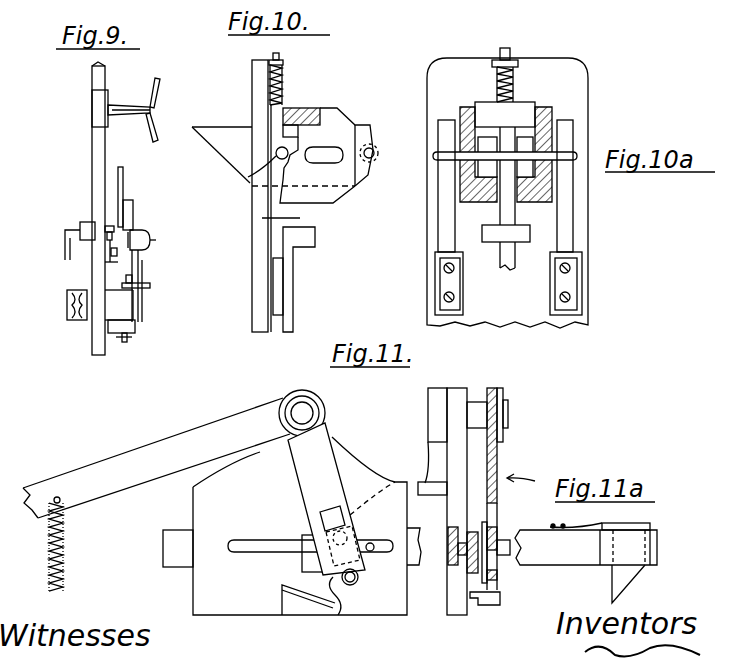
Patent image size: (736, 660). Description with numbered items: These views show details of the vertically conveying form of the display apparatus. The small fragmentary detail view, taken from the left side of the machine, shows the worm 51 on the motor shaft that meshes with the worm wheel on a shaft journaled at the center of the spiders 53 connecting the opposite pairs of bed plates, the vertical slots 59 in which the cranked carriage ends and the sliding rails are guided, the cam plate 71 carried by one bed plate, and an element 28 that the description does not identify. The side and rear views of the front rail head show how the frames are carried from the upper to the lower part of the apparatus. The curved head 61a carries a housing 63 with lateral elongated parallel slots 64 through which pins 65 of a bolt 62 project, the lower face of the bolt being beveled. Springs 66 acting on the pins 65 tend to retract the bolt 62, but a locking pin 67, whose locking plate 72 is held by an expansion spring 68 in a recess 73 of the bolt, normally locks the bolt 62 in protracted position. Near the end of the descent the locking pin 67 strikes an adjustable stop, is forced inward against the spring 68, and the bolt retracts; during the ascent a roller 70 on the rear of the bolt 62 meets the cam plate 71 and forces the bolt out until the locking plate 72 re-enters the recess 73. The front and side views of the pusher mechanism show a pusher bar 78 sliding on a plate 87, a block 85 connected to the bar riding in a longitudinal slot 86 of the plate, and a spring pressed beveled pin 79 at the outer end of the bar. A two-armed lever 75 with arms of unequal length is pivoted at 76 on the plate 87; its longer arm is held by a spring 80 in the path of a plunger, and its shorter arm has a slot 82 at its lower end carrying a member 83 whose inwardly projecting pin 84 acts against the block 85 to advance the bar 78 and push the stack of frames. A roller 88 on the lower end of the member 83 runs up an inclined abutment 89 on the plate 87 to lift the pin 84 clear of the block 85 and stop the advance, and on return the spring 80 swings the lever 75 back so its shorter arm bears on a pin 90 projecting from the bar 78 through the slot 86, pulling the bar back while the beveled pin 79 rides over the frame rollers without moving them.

In FIG. 9, the adjusting screw 28 is at (121, 342).
In FIG. 9, the worm 51 is at (108, 237).
In FIG. 9, the spider 53 is at (110, 258).
In FIG. 9, the vertical slot 59 is at (142, 288).
In FIG. 10, the curved head 61a is at (258, 275).
In FIG. 10A, the curved head 61a is at (570, 80).
In FIG. 10, the bolt 62 is at (212, 127).
In FIG. 10A, the bolt 62 is at (552, 135).
In FIG. 10, the housing 63 is at (340, 124).
In FIG. 10, the elongated parallel slot 64 is at (328, 163).
In FIG. 10A, the elongated parallel slot 64 is at (458, 163).
In FIG. 10, the pin 65 is at (248, 177).
In FIG. 10A, the pin 65 is at (433, 156).
In FIG. 10, the spring 66 is at (292, 219).
In FIG. 10A, the spring 66 is at (450, 216).
In FIG. 10, the locking pin 67 is at (302, 247).
In FIG. 10A, the locking pin 67 is at (495, 238).
In FIG. 10, the expansion spring 68 is at (283, 86).
In FIG. 10A, the expansion spring 68 is at (513, 78).
In FIG. 10, the roller 70 is at (376, 150).
In FIG. 9, the cam plate 71 is at (149, 98).
In FIG. 10, the locking plate 72 is at (300, 114).
In FIG. 10A, the locking plate 72 is at (520, 110).
In FIG. 10, the recess 73 is at (318, 118).
In FIG. 11, the two-armed lever 75 is at (108, 470).
In FIG. 11A, the two-armed lever 75 is at (492, 462).
In FIG. 11A, the pivot 76 is at (475, 412).
In FIG. 11, the pusher bar 78 is at (175, 545).
In FIG. 11A, the pusher bar 78 is at (578, 566).
In FIG. 11A, the spring pressed beveled pin 79 is at (628, 590).
In FIG. 11, the spring 80 is at (64, 552).
In FIG. 11, the slot 82 is at (332, 516).
In FIG. 11, the member 83 is at (337, 608).
In FIG. 11A, the member 83 is at (500, 535).
In FIG. 11, the inwardly projecting pin 84 is at (378, 486).
In FIG. 11A, the inwardly projecting pin 84 is at (492, 527).
In FIG. 11, the block 85 is at (308, 558).
In FIG. 11A, the block 85 is at (460, 555).
In FIG. 11, the longitudinal slot 86 is at (245, 545).
In FIG. 11, the plate 87 is at (215, 590).
In FIG. 11A, the plate 87 is at (460, 608).
In FIG. 11, the roller 88 is at (357, 585).
In FIG. 11A, the roller 88 is at (500, 577).
In FIG. 11, the inclined abutment 89 is at (308, 607).
In FIG. 11A, the inclined abutment 89 is at (497, 605).
In FIG. 11, the pin 90 is at (375, 546).